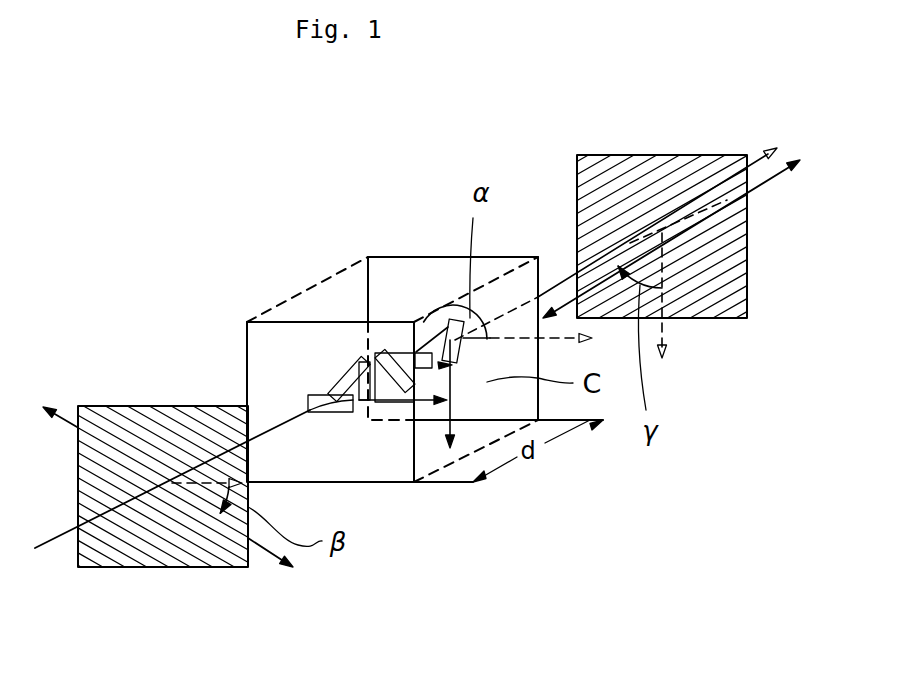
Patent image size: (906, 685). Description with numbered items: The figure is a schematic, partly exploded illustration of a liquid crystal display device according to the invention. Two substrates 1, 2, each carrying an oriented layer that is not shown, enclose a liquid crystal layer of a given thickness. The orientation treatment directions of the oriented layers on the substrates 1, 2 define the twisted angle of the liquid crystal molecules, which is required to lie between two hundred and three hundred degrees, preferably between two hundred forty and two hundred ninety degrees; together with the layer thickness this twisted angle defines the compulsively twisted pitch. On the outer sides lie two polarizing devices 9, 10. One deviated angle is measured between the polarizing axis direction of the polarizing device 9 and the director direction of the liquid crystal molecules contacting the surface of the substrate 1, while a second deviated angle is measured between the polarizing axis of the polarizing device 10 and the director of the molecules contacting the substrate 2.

The substrate 1 is at (378, 455).
The substrate 2 is at (403, 282).
The polarizing device 9 is at (150, 428).
The polarizing device 10 is at (638, 178).